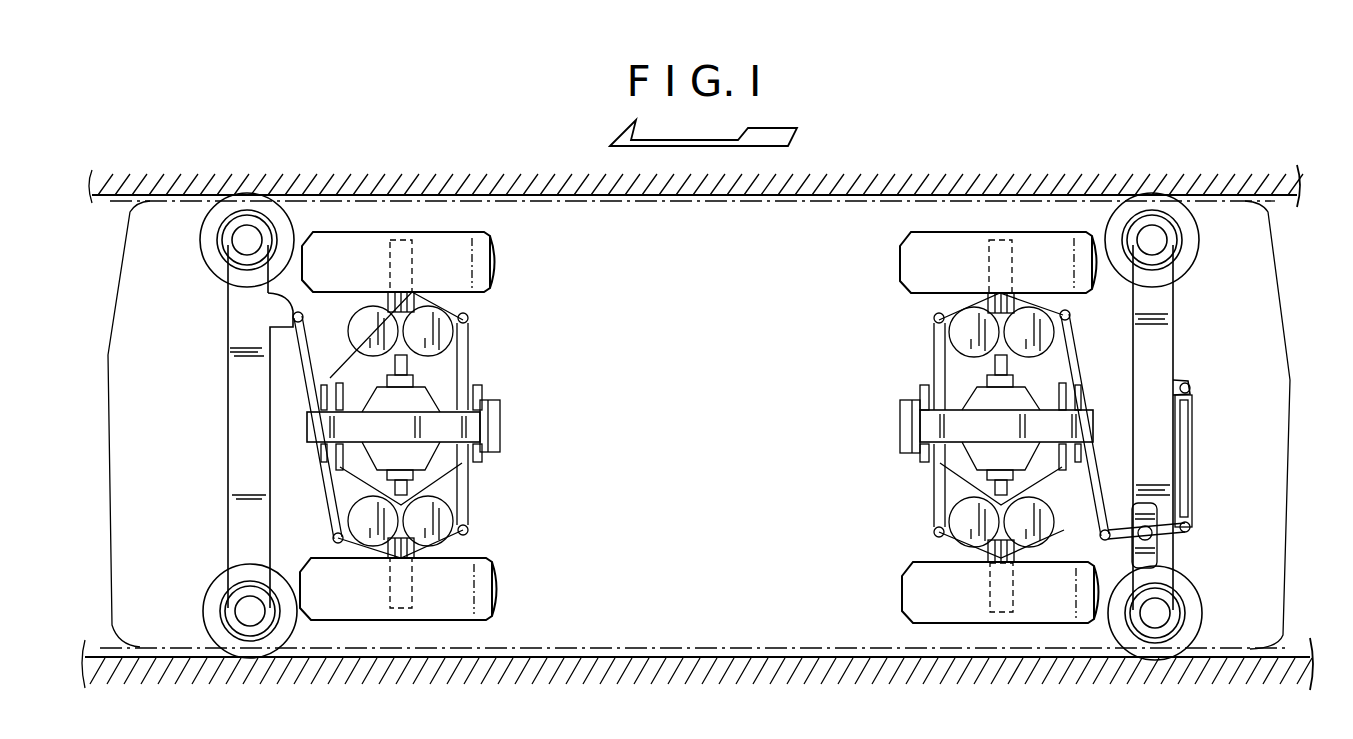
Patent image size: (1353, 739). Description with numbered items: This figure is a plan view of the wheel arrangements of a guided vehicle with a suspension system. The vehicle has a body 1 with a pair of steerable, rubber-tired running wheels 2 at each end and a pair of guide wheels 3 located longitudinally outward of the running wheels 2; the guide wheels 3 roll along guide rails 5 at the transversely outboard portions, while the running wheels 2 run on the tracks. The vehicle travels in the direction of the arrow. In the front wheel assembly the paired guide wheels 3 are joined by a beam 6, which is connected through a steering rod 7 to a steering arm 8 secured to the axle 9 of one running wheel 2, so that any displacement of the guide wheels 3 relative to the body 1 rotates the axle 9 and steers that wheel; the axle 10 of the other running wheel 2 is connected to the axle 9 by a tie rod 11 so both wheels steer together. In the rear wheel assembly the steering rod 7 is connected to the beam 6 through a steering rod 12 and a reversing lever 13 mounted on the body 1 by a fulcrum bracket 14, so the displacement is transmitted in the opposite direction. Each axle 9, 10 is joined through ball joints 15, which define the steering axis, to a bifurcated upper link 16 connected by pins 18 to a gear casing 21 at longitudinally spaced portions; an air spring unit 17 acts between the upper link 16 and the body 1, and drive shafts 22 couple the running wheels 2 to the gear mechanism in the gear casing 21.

The body 1 is at (903, 200).
The running wheels 2 is at (482, 266).
The guide wheels 3 is at (203, 242).
The guide rails 5 is at (333, 178).
The beam 6 is at (228, 472).
The steering rod 7 is at (330, 508).
The steering arm 8 is at (366, 552).
The axle 9 is at (427, 552).
The axle 10 is at (418, 295).
The tie rod 11 is at (467, 341).
The steering rod 12 is at (1189, 433).
The reversing lever 13 is at (1122, 538).
The fulcrum bracket 14 is at (1162, 560).
The ball joint 15 is at (413, 292).
The upper link 16 is at (345, 363).
The air spring unit 17 is at (366, 322).
The pins 18 is at (475, 388).
The gear casing 21 is at (490, 428).
The drive shafts 22 is at (460, 468).